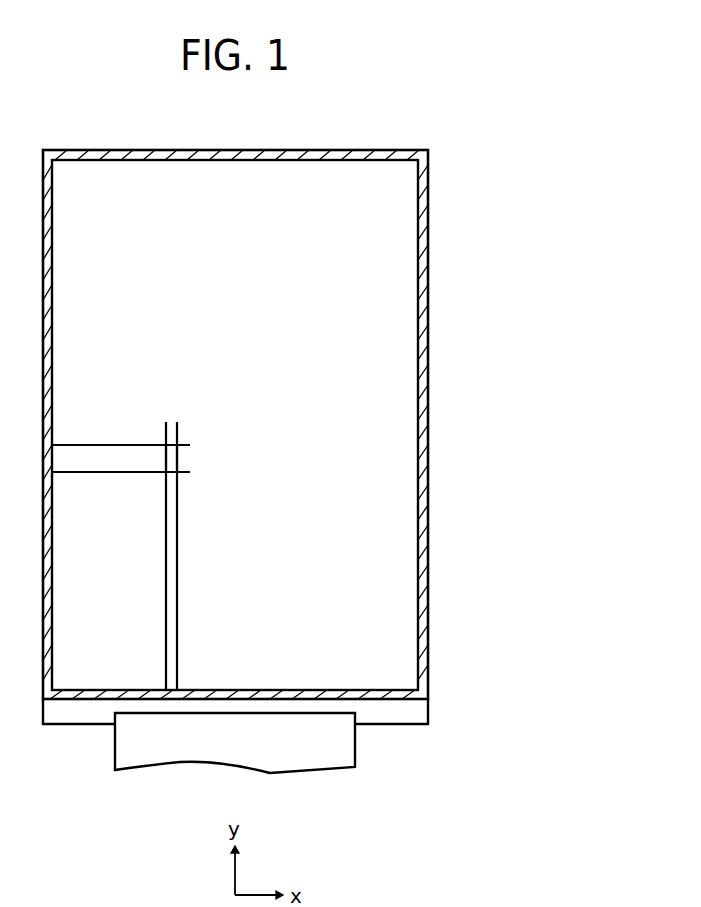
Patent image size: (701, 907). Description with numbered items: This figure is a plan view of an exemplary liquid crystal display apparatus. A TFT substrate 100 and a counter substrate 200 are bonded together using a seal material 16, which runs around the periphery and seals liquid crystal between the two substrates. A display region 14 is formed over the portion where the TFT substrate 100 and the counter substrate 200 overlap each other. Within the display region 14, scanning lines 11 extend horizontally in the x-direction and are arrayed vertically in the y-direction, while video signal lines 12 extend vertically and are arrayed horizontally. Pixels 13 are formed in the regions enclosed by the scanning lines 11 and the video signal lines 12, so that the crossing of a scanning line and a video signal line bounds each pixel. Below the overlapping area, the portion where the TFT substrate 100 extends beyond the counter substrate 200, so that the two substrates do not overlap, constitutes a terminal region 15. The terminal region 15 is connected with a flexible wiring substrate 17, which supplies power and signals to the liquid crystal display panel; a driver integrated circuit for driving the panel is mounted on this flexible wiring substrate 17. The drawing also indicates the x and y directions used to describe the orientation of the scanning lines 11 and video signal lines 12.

The scanning lines 11 is at (108, 444).
The video signal lines 12 is at (178, 517).
The pixels 13 is at (170, 460).
The display region 14 is at (388, 377).
The terminal region 15 is at (385, 718).
The seal material 16 is at (274, 424).
The flexible wiring substrate 17 is at (124, 741).
The TFT substrate 100 is at (281, 738).
The counter substrate 200 is at (281, 467).